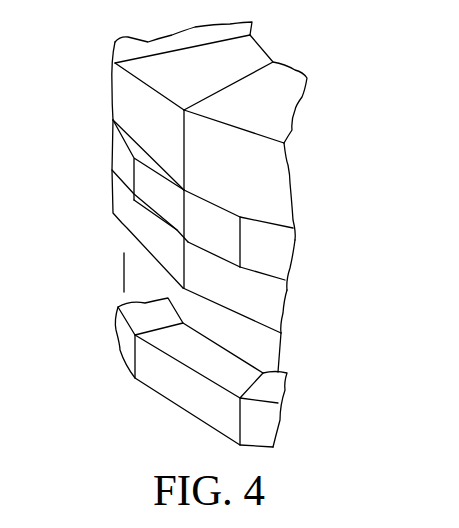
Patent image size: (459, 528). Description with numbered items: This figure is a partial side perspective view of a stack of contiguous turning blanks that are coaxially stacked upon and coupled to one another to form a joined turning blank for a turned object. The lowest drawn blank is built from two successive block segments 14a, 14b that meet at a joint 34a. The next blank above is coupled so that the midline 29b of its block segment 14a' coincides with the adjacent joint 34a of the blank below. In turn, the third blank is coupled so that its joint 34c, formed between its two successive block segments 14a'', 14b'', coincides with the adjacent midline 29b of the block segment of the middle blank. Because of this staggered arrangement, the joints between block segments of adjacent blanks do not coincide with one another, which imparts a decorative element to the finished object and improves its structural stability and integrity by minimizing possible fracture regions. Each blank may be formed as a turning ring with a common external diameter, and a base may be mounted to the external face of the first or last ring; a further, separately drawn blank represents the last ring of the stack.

The block segment 14a is at (157, 111).
The block segment 14a' is at (122, 181).
The block segment 14a'' is at (126, 231).
The block segment 14b is at (260, 99).
The block segment 14b'' is at (311, 306).
The joint 34a is at (184, 152).
The joint 34c is at (185, 273).
The midline 29b is at (185, 217).